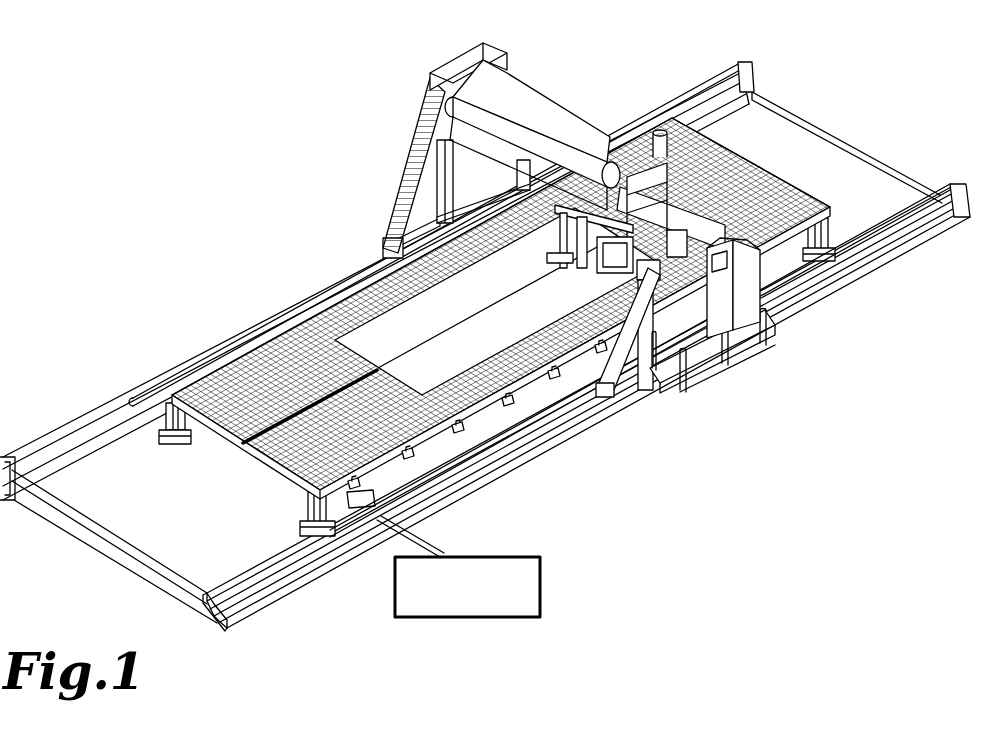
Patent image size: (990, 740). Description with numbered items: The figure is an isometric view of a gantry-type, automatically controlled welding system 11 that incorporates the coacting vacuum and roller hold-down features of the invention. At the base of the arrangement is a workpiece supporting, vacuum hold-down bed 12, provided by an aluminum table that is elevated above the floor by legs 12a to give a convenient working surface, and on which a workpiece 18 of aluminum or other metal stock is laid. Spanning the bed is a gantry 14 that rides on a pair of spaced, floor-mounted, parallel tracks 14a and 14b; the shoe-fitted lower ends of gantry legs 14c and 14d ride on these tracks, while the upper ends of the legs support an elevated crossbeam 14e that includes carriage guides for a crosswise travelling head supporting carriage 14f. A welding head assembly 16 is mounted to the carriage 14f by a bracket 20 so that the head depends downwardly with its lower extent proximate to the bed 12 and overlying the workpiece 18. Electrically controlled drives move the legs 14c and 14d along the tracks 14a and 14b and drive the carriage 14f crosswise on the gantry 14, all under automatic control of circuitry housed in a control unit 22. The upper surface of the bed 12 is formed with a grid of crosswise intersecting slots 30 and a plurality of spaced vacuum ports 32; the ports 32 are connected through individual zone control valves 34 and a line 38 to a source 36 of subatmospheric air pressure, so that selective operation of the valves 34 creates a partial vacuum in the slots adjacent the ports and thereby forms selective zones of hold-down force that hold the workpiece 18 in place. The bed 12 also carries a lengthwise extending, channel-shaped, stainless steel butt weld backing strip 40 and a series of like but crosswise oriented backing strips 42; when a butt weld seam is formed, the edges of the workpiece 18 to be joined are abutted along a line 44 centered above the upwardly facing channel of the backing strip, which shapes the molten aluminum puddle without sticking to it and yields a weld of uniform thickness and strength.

The automatically controlled welding system 11 is at (292, 247).
The vacuum hold-down bed 12 is at (211, 389).
The legs 12a is at (197, 432).
The gantry 14 is at (603, 131).
The track 14a is at (667, 95).
The track 14b is at (893, 230).
The gantry leg 14c is at (388, 224).
The gantry leg 14d is at (620, 363).
The crossbeam 14e is at (517, 130).
The head supporting carriage 14f is at (677, 197).
The welding head assembly 16 is at (589, 278).
The workpiece 18 is at (427, 367).
The bracket 20 is at (555, 237).
The control unit 22 is at (747, 312).
The grid of crosswise intersecting slots 30 is at (310, 470).
The vacuum ports 32 is at (303, 495).
The zone control valves 34 is at (353, 486).
The source of subatmospheric air pressure 36 is at (542, 588).
The line 38 is at (377, 522).
The butt weld backing strip 40 is at (285, 447).
The backing strips / channel 42 is at (262, 392).
The line 44 is at (445, 333).